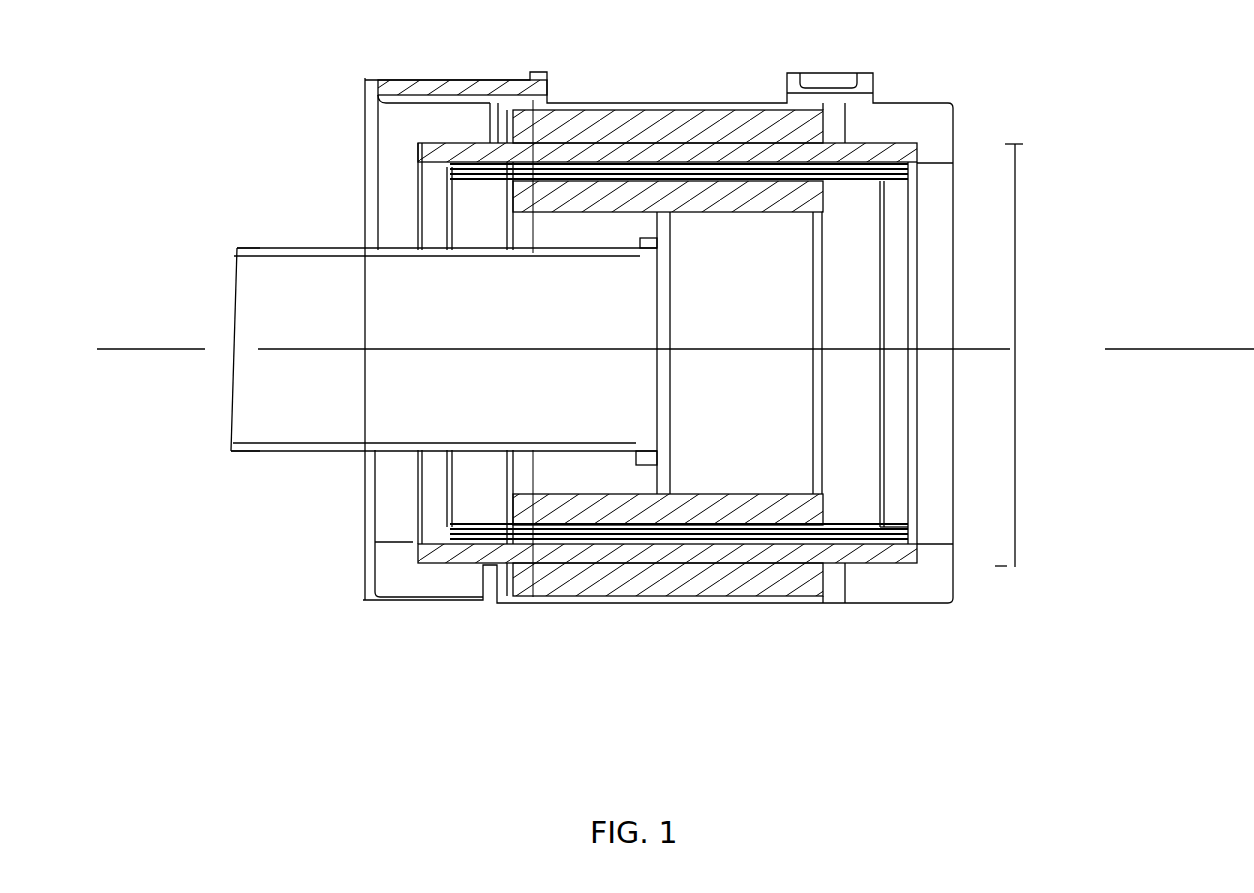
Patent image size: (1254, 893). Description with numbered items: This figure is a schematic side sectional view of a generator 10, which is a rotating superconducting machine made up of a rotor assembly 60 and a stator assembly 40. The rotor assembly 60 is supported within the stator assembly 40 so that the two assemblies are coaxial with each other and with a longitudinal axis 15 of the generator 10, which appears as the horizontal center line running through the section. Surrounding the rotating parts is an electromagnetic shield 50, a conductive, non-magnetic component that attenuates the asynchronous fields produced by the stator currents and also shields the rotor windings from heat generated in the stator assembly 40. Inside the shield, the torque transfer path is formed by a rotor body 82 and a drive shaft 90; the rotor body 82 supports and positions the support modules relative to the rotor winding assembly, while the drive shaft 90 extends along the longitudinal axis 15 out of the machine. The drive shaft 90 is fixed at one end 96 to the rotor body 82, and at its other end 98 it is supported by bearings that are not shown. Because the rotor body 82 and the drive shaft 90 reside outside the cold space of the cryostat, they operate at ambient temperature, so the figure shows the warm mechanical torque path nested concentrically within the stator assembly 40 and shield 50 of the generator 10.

The generator 10 is at (257, 62).
The longitudinal axis 15 is at (1172, 350).
The stator assembly 40 is at (716, 124).
The electromagnetic shield 50 is at (895, 153).
The rotor assembly 60 is at (1021, 329).
The rotor body 82 is at (603, 193).
The drive shaft 90 is at (440, 381).
The one end of the drive shaft 96 is at (620, 443).
The other end of the drive shaft 98 is at (265, 443).